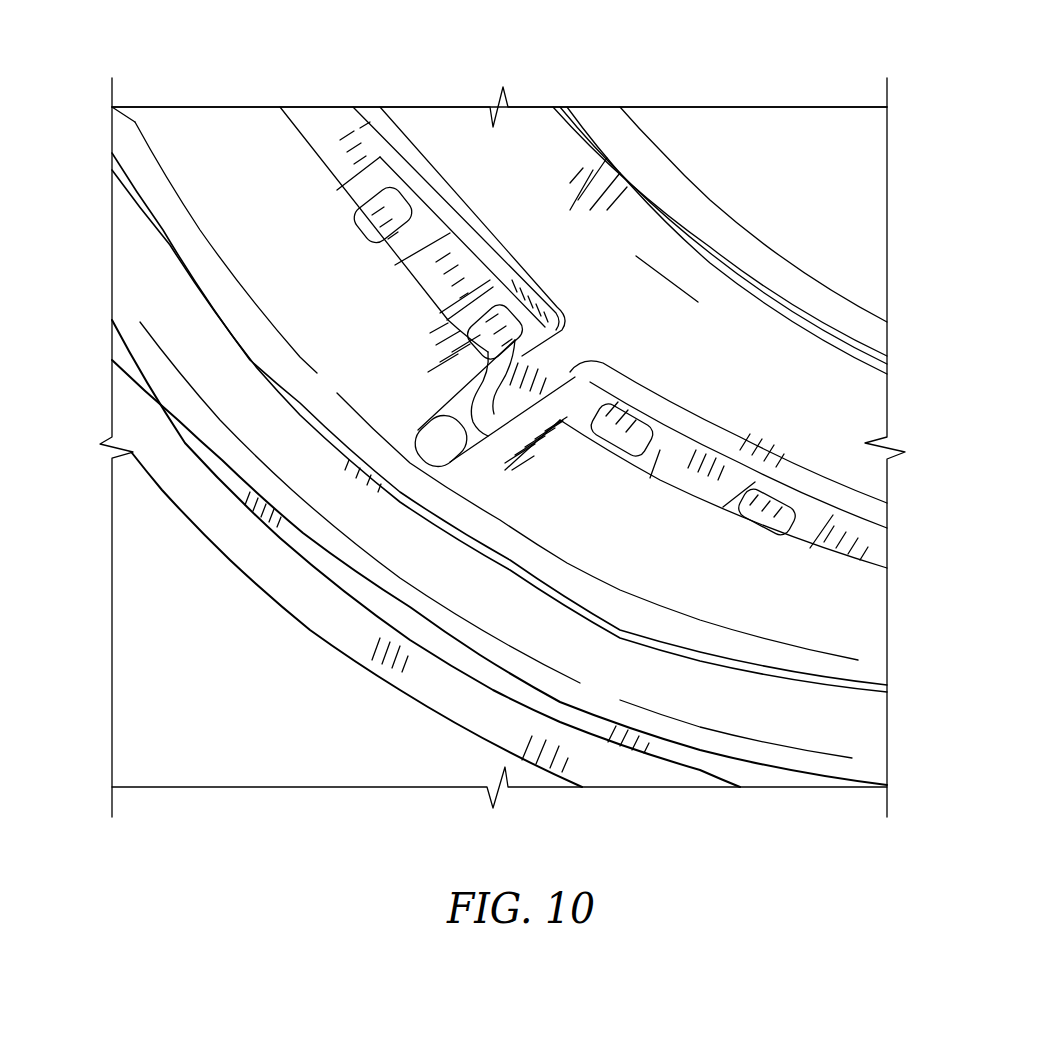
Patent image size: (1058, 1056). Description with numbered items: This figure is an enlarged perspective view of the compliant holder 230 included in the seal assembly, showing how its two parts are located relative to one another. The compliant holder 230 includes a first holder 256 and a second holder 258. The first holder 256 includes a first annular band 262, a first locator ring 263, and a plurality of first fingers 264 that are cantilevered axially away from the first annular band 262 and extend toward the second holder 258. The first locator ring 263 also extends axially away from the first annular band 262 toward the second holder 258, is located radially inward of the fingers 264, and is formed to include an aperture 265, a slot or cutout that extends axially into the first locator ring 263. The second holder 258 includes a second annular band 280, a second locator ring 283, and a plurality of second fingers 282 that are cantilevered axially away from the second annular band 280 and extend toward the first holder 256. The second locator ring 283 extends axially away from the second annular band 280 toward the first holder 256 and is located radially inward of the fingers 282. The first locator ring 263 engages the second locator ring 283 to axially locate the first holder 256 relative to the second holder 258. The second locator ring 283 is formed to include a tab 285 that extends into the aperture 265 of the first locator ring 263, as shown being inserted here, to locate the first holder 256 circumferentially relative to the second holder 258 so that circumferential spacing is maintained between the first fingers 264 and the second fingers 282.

The compliant holder 230 is at (371, 94).
The first holder 256 is at (182, 180).
The second holder 258 is at (574, 172).
The first annular band 262 is at (384, 530).
The first locator ring 263 is at (281, 165).
The first fingers 264 is at (623, 421).
The aperture 265 is at (440, 444).
The second annular band 280 is at (656, 144).
The second fingers 282 is at (716, 475).
The second locator ring 283 is at (635, 255).
The tab 285 is at (568, 363).